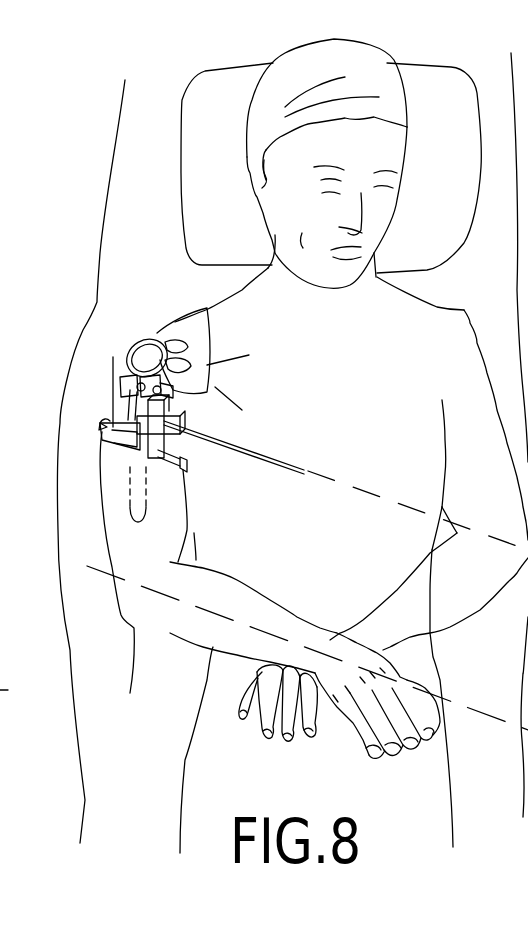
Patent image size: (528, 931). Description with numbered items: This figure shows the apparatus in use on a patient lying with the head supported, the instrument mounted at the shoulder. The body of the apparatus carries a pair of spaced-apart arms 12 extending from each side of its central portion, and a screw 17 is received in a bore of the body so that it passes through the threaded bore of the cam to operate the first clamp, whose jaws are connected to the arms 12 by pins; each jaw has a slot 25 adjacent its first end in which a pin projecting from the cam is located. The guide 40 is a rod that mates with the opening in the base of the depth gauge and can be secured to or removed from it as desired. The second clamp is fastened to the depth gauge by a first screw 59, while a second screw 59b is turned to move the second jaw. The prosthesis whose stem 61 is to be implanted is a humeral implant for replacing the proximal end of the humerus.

The arms 12 is at (105, 428).
The screw 17 is at (187, 467).
The slot 25 is at (137, 437).
The guide 40 is at (262, 450).
The first screw 59 is at (210, 372).
The second screw 59b is at (123, 363).
The stem 61 is at (123, 586).